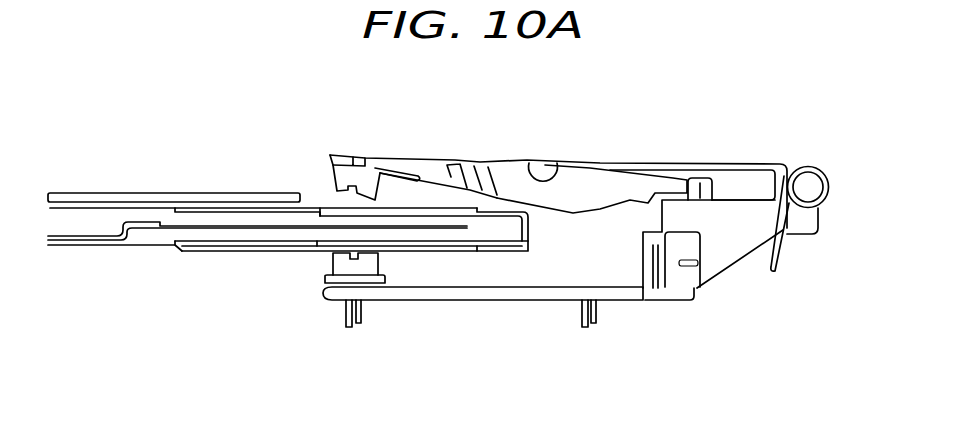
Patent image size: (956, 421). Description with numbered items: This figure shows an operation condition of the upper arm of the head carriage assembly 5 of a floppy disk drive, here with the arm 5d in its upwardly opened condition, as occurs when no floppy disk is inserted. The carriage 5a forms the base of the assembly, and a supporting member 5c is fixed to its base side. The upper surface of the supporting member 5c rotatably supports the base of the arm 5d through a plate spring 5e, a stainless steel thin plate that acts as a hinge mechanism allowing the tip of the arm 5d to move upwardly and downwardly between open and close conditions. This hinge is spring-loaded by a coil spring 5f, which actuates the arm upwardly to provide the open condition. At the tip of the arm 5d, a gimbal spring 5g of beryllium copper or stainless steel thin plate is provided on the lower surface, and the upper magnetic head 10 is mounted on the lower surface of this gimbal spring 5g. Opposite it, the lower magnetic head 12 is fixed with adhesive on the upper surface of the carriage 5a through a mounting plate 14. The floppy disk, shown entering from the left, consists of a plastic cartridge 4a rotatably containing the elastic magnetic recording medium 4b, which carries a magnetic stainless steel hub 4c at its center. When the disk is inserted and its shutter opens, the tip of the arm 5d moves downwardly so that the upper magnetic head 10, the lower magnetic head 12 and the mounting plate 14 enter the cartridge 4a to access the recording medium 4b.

The cartridge 4a is at (500, 252).
The magnetic recording medium 4b is at (440, 228).
The hub 4c is at (78, 245).
The head carriage assembly 5 is at (675, 148).
The carriage 5a is at (547, 296).
The supporting member 5c is at (728, 255).
The arm 5d is at (580, 178).
The plate spring 5e is at (700, 172).
The coil spring 5f is at (810, 166).
The gimbal spring 5g is at (407, 172).
The upper magnetic head 10 is at (362, 176).
The lower magnetic head 12 is at (372, 267).
The mounting plate 14 is at (325, 282).